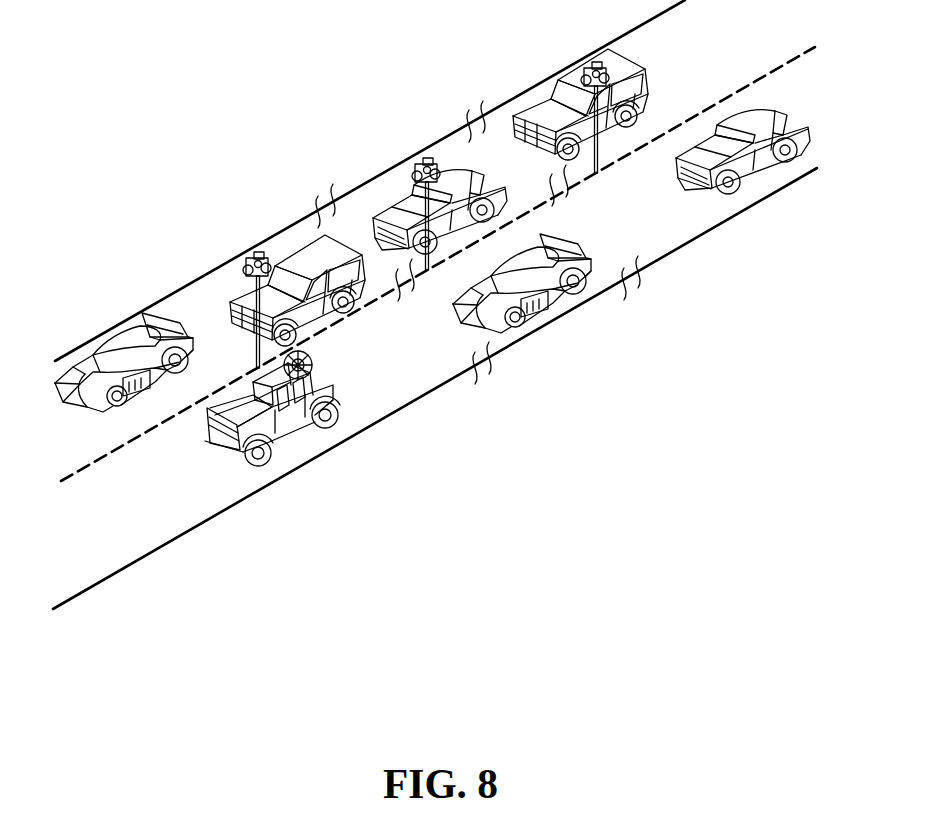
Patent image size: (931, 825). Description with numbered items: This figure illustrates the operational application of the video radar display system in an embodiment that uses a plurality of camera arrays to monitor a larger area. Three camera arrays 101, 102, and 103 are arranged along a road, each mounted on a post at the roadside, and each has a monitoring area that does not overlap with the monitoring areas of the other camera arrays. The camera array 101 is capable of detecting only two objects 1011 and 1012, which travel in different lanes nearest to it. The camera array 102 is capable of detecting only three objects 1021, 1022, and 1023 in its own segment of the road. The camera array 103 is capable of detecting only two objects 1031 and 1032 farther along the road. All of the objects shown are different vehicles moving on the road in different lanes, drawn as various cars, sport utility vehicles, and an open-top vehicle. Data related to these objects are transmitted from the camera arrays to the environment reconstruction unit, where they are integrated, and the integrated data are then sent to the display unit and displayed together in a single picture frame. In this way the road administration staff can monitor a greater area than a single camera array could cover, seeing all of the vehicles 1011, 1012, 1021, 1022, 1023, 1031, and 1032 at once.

The camera array 101 is at (255, 258).
The camera array 102 is at (425, 160).
The camera array 103 is at (592, 63).
The object 1011 is at (100, 352).
The object 1012 is at (297, 432).
The object 1021 is at (392, 208).
The object 1022 is at (547, 292).
The object 1023 is at (327, 257).
The object 1031 is at (732, 195).
The object 1032 is at (532, 100).